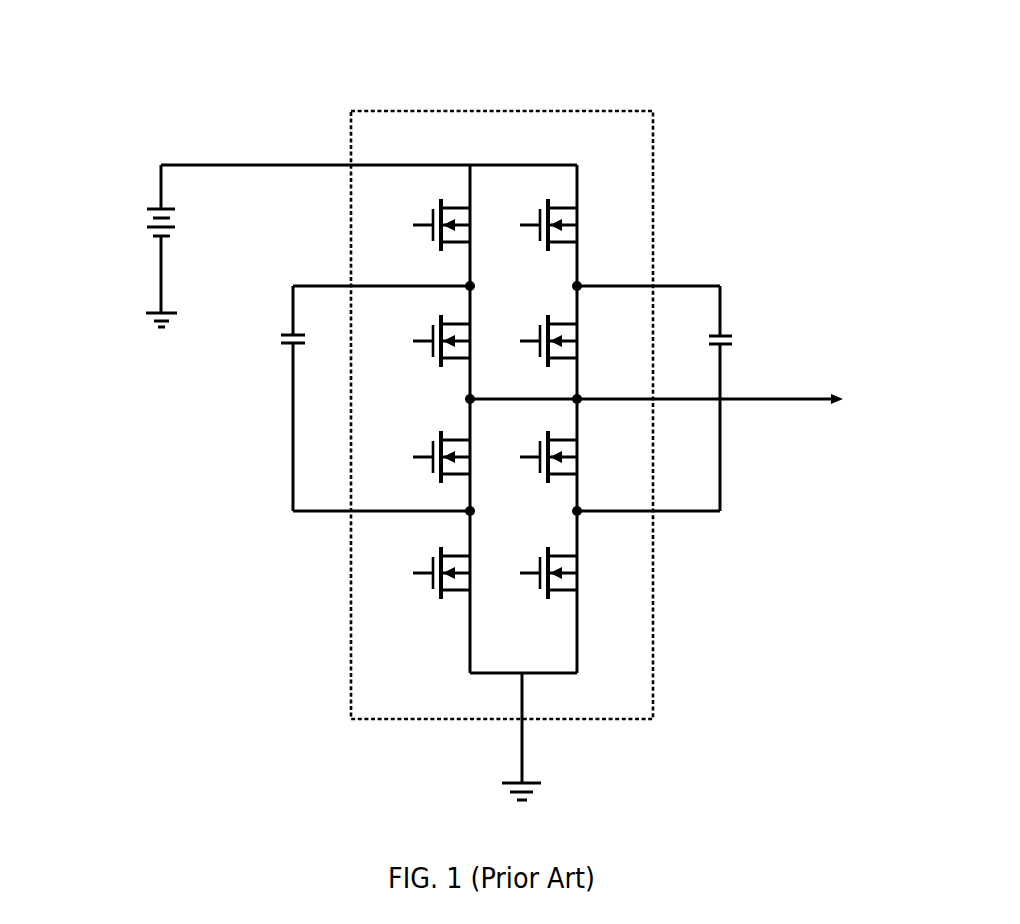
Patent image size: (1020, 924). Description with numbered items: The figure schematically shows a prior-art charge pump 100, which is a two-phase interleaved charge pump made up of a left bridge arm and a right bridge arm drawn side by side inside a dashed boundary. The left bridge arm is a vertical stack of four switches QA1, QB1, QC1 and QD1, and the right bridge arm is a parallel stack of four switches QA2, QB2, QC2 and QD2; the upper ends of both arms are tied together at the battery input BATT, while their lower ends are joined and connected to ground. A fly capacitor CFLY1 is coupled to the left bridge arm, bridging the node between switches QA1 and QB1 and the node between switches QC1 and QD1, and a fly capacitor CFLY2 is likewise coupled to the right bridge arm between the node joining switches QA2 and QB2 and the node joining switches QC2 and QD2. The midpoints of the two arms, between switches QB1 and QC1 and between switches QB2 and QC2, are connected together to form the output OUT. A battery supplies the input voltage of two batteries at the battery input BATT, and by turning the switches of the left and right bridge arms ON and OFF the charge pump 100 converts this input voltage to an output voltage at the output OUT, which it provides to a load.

The charge pump 100 is at (514, 84).
The switch QA1 is at (420, 230).
The switch QA2 is at (530, 230).
The switch QB1 is at (420, 346).
The switch QB2 is at (530, 346).
The switch QC1 is at (420, 462).
The switch QC2 is at (530, 462).
The switch QD1 is at (420, 580).
The switch QD2 is at (530, 580).
The fly capacitor CFLY1 is at (334, 398).
The fly capacitor CFLY2 is at (699, 398).
The output OUT is at (715, 391).
The battery input BATT is at (310, 229).